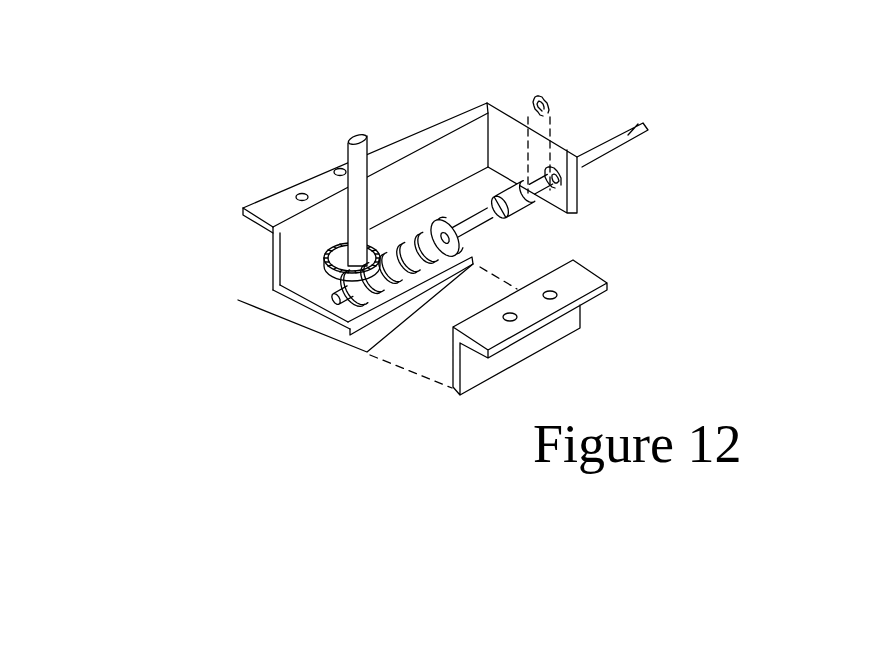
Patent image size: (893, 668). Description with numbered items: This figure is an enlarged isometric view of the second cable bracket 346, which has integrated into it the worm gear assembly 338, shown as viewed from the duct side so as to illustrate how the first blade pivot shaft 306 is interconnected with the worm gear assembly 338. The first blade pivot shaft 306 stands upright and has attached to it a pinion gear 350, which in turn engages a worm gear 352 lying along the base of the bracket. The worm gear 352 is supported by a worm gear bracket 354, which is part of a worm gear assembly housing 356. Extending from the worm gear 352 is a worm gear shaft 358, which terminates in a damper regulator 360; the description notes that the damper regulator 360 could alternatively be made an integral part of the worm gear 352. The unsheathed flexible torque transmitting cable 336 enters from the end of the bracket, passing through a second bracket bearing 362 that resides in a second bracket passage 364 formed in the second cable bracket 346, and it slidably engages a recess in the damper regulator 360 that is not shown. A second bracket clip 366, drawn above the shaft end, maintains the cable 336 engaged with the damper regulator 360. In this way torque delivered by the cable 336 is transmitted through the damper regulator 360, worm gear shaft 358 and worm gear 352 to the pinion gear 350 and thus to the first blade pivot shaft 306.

The first blade pivot shaft 306 is at (353, 208).
The unsheathed flexible torque transmitting cable 336 is at (647, 127).
The worm gear assembly 338 is at (190, 168).
The second cable bracket 346 is at (510, 143).
The pinion gear 350 is at (327, 273).
The worm gear 352 is at (414, 225).
The worm gear bracket 354 is at (368, 355).
The worm gear assembly housing 356 is at (310, 313).
The worm gear shaft 358 is at (470, 227).
The damper regulator 360 is at (522, 202).
The second bracket bearing 362 is at (565, 193).
The second bracket passage 364 is at (560, 137).
The second bracket clip 366 is at (537, 92).